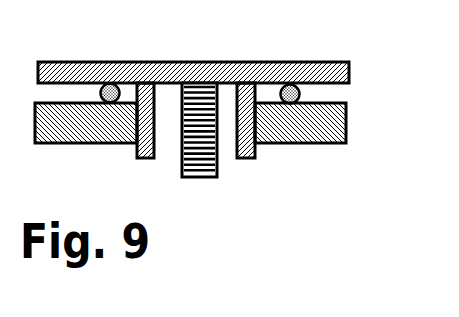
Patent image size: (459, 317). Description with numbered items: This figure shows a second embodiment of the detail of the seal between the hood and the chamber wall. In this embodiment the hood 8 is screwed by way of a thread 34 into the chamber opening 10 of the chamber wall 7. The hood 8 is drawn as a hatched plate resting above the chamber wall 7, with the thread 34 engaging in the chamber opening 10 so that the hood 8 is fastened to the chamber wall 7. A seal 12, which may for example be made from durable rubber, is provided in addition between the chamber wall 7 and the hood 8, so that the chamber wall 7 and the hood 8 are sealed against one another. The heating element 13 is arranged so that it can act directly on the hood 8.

The chamber wall 7 is at (347, 125).
The hood 8 is at (350, 72).
The chamber opening 10 is at (252, 127).
The seal 12 is at (300, 96).
The heating element 13 is at (215, 177).
The thread 34 is at (135, 147).